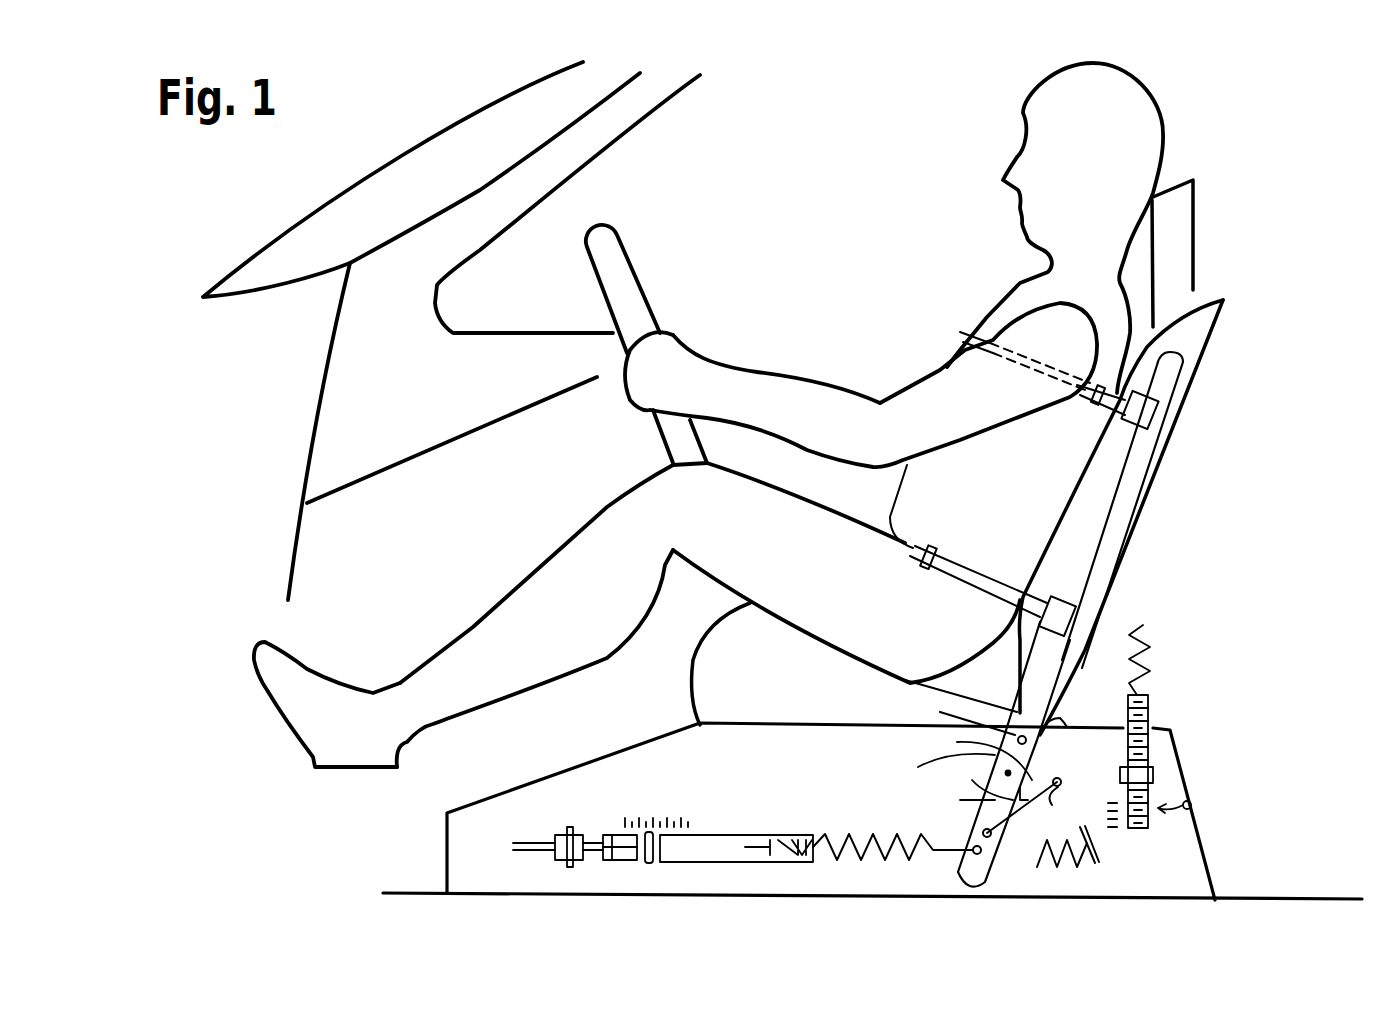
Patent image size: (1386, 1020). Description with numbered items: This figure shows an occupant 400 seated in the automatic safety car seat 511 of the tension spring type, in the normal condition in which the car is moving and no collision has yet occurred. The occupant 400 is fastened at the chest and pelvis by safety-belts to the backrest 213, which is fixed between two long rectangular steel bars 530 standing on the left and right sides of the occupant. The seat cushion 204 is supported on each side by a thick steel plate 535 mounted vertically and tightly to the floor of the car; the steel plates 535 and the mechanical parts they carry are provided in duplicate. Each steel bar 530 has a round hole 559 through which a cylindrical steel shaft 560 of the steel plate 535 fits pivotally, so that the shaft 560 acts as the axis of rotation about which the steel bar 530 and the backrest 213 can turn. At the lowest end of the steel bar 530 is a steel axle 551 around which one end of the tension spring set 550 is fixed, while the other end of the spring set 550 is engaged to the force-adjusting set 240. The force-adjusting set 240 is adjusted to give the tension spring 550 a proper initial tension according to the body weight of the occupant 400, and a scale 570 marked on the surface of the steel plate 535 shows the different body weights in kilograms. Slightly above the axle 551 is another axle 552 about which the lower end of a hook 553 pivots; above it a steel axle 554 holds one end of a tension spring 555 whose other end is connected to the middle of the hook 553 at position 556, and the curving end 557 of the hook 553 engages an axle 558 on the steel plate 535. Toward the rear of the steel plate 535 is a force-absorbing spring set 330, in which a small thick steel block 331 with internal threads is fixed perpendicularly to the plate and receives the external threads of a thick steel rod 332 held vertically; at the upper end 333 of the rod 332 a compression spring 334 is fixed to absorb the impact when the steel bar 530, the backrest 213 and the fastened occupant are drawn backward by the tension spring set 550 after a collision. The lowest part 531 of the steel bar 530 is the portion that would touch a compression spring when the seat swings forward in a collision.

The occupant 400 is at (990, 277).
The backrest 213 is at (1170, 431).
The steel bars 530 is at (1113, 507).
The lowest part of the steel bar 531 is at (993, 850).
The automatic safety car seat 511 is at (1146, 570).
The seat cushion 204 is at (700, 686).
The steel plates 535 is at (607, 755).
The cylindrical steel shaft 560 is at (963, 727).
The round hole 559 is at (1018, 715).
The hook 553 is at (974, 754).
The steel axle 554 is at (937, 771).
The tension spring 555 is at (979, 781).
The position on the hook 556 is at (956, 798).
The axle 552 is at (983, 833).
The curving end of the hook 557 is at (1058, 778).
The axle 558 is at (1072, 805).
The steel axle 551 is at (970, 853).
The tension spring set 550 is at (860, 833).
The force-adjusting set 240 is at (586, 814).
The scale 570 is at (677, 817).
The thick steel rod 332 is at (1140, 717).
The small thick steel block 331 is at (1140, 777).
The upper end of the steel rod 333 is at (1147, 693).
The compression spring 334 is at (1155, 623).
The force-absorbing spring set 330 is at (1191, 805).